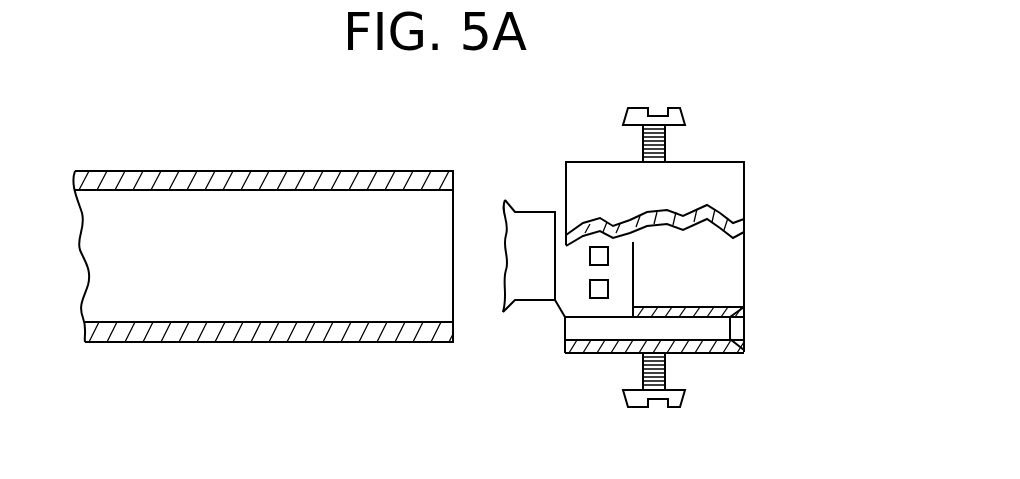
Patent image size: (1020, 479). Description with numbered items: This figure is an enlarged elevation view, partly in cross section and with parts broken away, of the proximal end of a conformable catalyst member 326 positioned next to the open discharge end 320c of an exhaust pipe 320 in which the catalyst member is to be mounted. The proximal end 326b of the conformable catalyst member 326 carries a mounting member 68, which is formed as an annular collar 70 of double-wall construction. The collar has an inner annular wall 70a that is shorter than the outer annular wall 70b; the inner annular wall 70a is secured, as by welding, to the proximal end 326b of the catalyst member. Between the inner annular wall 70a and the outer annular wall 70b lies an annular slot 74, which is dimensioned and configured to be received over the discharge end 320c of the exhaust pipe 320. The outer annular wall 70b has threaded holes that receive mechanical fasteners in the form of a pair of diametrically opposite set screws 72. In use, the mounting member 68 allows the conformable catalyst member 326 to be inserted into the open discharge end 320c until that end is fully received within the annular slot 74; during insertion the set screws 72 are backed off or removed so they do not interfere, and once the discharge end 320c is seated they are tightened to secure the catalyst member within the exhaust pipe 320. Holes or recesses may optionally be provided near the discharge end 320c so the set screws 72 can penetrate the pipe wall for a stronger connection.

The exhaust pipe 320 is at (205, 171).
The discharge end 320c is at (455, 215).
The conformable catalyst member 326 is at (533, 293).
The proximal end 326b is at (634, 262).
The mounting member 68 is at (679, 265).
The annular collar 70 is at (744, 182).
The inner annular wall 70a is at (703, 313).
The outer annular wall 70b is at (603, 173).
The set screws 72 is at (668, 138).
The annular slot 74 is at (578, 332).